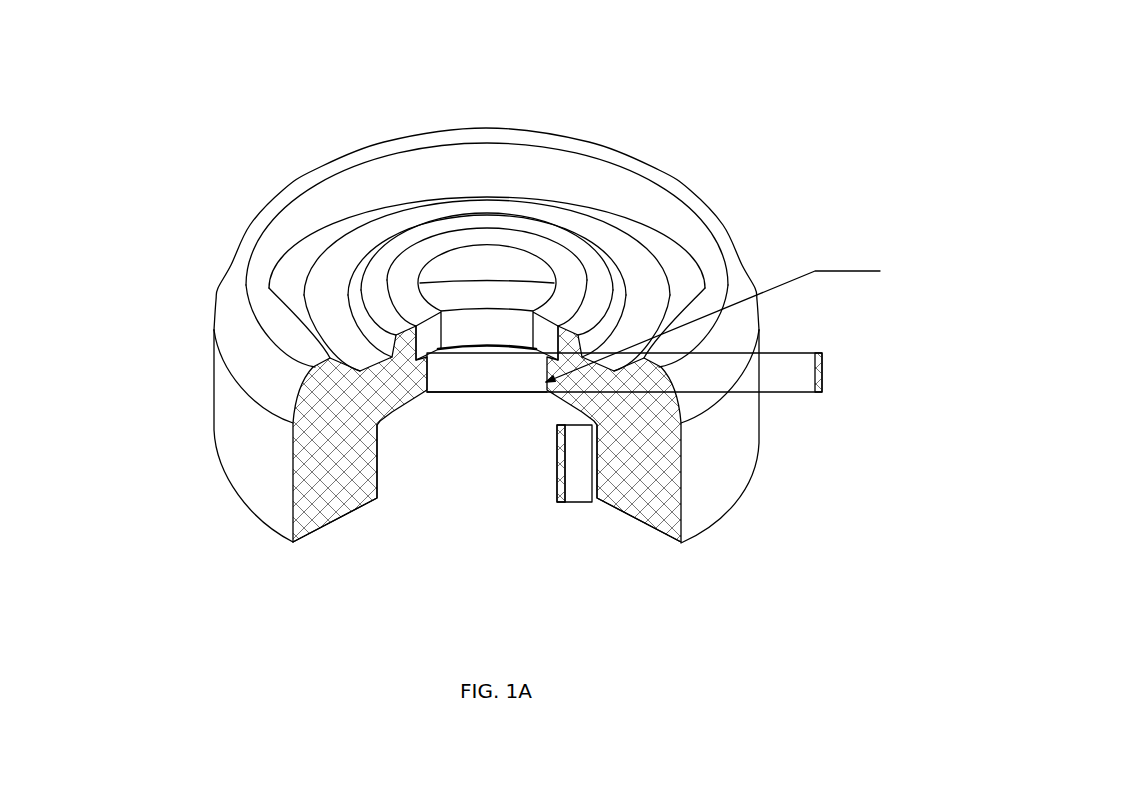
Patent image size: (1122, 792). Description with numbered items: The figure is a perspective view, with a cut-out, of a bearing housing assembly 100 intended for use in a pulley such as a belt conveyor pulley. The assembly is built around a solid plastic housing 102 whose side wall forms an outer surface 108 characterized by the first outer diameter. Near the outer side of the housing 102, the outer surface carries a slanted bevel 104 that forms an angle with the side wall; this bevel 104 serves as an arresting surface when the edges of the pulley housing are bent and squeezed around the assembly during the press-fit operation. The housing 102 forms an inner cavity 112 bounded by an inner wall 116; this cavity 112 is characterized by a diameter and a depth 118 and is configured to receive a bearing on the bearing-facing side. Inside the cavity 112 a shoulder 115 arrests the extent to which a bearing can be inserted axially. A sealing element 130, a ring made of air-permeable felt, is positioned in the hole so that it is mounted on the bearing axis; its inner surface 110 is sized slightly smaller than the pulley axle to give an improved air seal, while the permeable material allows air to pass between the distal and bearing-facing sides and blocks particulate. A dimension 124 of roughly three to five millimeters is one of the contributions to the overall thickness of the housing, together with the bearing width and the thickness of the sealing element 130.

The bearing housing assembly 100 is at (248, 146).
The housing 102 is at (318, 396).
The bevel 104 is at (232, 285).
The outer surface 108 is at (260, 463).
The inner surface 110 is at (513, 270).
The inner cavity 112 is at (452, 450).
The shoulder 115 is at (375, 424).
The inner wall 116 is at (593, 462).
The depth 118 is at (558, 465).
The dimension 124 is at (938, 401).
The sealing element 130 is at (412, 285).